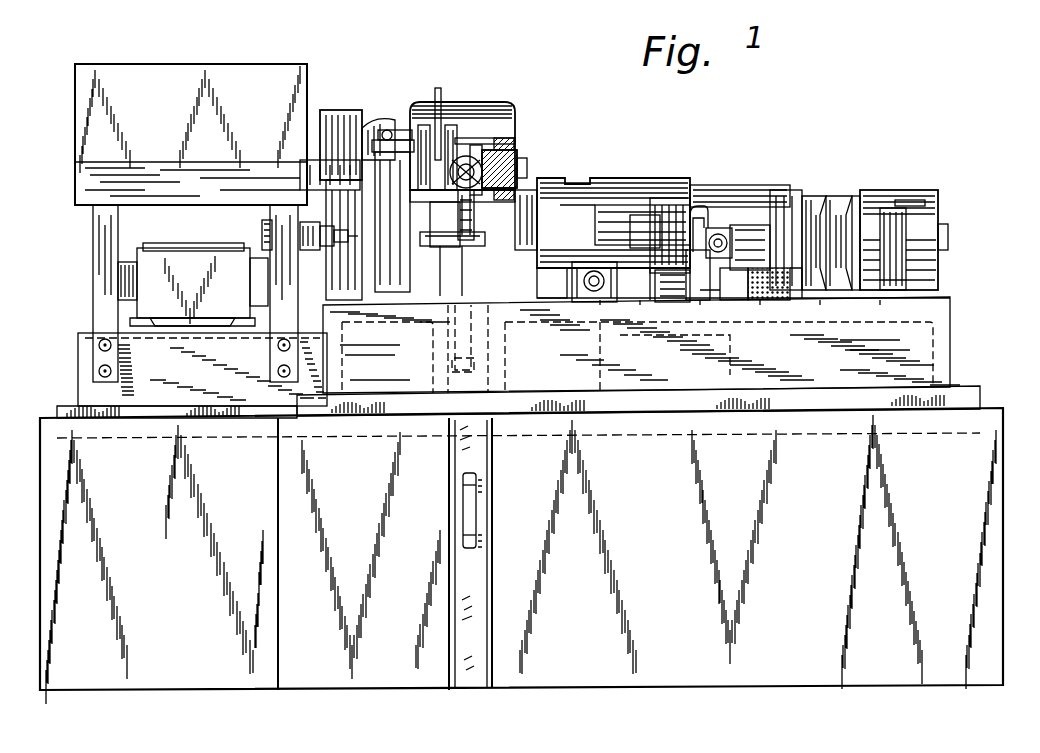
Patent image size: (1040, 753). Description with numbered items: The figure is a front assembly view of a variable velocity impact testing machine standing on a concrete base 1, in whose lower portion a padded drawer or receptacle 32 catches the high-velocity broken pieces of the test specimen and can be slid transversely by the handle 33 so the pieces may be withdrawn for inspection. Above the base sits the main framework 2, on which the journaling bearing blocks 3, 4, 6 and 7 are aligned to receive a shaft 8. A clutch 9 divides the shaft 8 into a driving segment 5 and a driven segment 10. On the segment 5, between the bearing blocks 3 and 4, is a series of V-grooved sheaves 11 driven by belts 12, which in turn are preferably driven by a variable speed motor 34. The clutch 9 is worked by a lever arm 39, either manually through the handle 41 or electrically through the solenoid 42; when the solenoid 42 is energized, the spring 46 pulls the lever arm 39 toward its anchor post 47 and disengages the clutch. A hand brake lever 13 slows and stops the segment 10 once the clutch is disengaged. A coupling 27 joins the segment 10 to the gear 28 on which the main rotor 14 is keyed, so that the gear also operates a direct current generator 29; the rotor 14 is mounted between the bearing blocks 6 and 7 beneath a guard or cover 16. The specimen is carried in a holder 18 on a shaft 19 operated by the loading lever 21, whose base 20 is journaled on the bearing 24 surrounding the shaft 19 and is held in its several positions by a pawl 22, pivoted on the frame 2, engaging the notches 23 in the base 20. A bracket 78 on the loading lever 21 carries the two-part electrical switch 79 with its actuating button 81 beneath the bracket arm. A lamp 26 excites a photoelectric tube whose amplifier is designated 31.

The concrete base 1 is at (1003, 482).
The main framework 2 is at (950, 342).
The bearing block 3 is at (918, 190).
The bearing block 4 is at (792, 198).
The shaft segment 5 is at (948, 232).
The bearing block 6 is at (556, 200).
The bearing block 7 is at (365, 205).
The shaft 8 is at (602, 218).
The clutch 9 is at (634, 218).
The shaft segment 10 is at (348, 226).
The sheaves 11 is at (816, 198).
The belts 12 is at (846, 198).
The hand brake lever 13 is at (595, 302).
The main rotor 14 is at (470, 156).
The guard 16 is at (500, 140).
The holder 18 is at (528, 182).
The shaft 19 is at (515, 160).
The lever base 20 is at (482, 150).
The loading lever 21 is at (480, 140).
The pawl 22 is at (432, 102).
The notches 23 is at (440, 130).
The bearing 24 is at (540, 200).
The lamp 26 is at (360, 112).
The coupling 27 is at (325, 260).
The gear 28 is at (262, 232).
The direct current generator 29 is at (140, 268).
The photoelectric amplifier 31 is at (172, 68).
The receptacle 32 is at (478, 600).
The handle 33 is at (476, 508).
The variable speed motor 34 is at (698, 206).
The lever arm 39 is at (720, 232).
The handle 41 is at (742, 232).
The solenoid 42 is at (765, 300).
The spring 46 is at (670, 302).
The anchor post 47 is at (656, 225).
The bracket 78 is at (400, 128).
The electrical switch 79 is at (372, 125).
The actuating button 81 is at (345, 165).